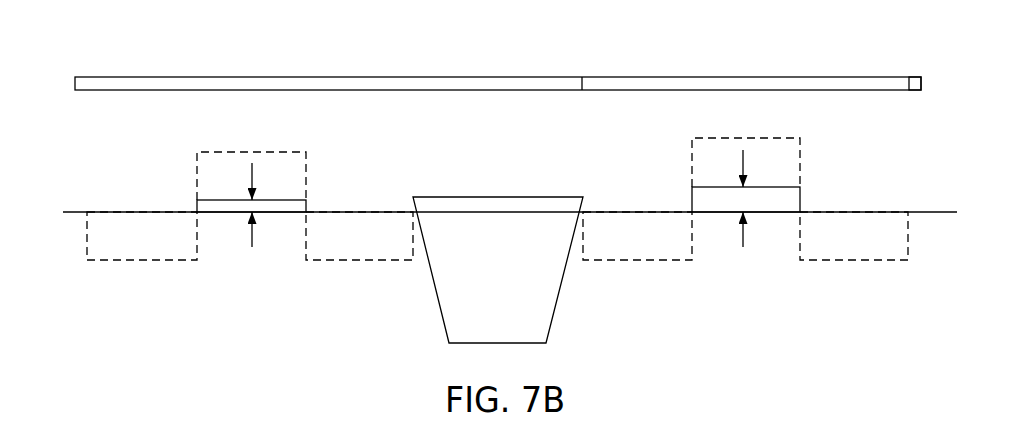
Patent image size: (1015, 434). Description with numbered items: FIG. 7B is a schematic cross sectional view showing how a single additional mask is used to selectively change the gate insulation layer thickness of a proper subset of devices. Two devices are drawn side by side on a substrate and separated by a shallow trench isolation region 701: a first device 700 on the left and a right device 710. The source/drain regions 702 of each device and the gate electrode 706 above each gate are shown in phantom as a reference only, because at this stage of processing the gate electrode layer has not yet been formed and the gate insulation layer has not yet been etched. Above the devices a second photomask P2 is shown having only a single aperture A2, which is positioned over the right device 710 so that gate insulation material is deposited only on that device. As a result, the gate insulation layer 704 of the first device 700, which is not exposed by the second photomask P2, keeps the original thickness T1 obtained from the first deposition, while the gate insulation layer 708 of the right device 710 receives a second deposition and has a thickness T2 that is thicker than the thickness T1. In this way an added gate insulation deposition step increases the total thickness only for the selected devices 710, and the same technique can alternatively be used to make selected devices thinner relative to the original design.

The first device 700 is at (343, 182).
The shallow trench isolation region 701 is at (475, 278).
The source/drain regions 702 is at (118, 253).
The gate insulation layer 704 is at (212, 200).
The gate electrode 706 is at (306, 171).
The gate insulation layer 708 is at (710, 186).
The right device 710 is at (838, 172).
The aperture A2 is at (740, 77).
The second photomask P2 is at (931, 75).
The gate insulation layer thickness T1 is at (256, 237).
The gate insulation layer thickness T2 is at (747, 232).